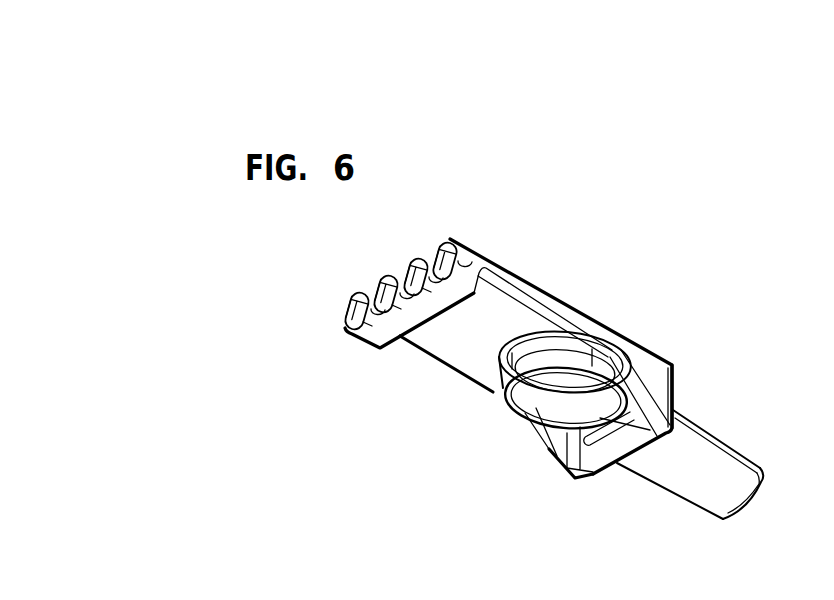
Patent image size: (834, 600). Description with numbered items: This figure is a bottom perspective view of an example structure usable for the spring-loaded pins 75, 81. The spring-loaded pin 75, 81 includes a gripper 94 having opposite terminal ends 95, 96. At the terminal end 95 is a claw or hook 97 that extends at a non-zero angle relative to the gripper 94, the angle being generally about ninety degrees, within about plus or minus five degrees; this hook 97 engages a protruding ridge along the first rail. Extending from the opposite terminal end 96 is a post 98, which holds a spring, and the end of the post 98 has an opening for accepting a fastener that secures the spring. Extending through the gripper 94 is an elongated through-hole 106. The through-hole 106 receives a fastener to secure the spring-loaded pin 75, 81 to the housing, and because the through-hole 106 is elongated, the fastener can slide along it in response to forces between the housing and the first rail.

The spring-loaded pin 75 is at (638, 162).
The spring-loaded pin 81 is at (641, 150).
The gripper 94 is at (537, 290).
The terminal end 95 is at (440, 252).
The terminal end 96 is at (678, 380).
The hook 97 is at (391, 345).
The post 98 is at (720, 440).
The through-hole 106 is at (534, 398).